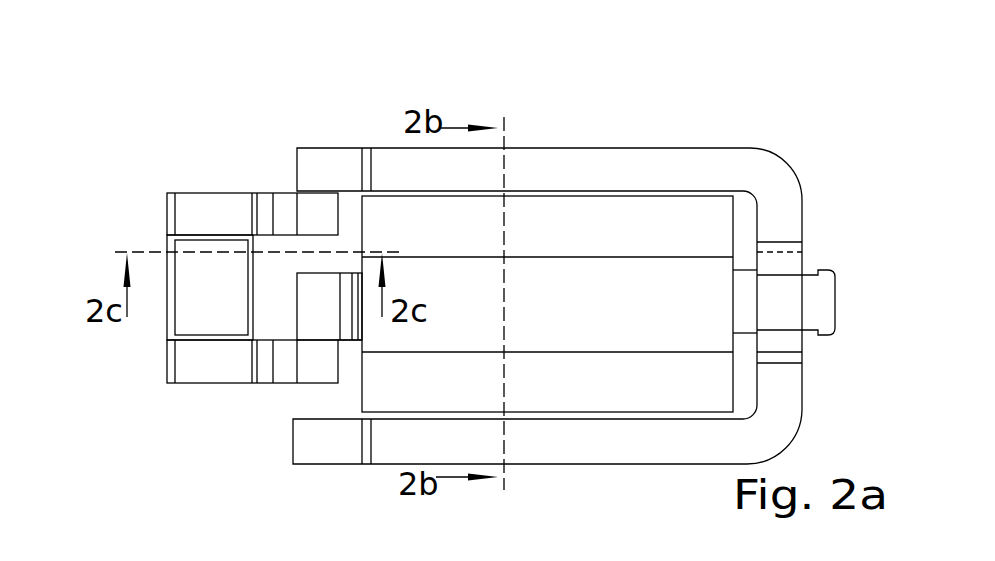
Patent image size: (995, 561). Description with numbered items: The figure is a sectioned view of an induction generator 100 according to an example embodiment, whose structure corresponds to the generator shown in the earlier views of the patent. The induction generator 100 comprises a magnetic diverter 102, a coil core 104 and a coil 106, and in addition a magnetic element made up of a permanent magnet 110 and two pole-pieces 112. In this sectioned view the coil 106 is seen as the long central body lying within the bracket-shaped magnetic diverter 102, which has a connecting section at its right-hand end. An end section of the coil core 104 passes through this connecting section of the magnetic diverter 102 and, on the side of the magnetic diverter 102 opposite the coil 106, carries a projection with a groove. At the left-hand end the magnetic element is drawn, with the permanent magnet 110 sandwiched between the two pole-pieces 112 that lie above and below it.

The induction generator 100 is at (480, 92).
The magnetic diverter 102 is at (670, 440).
The coil core 104 is at (743, 302).
The coil 106 is at (584, 225).
The permanent magnet 110 is at (200, 305).
The pole-pieces 112 is at (215, 213).